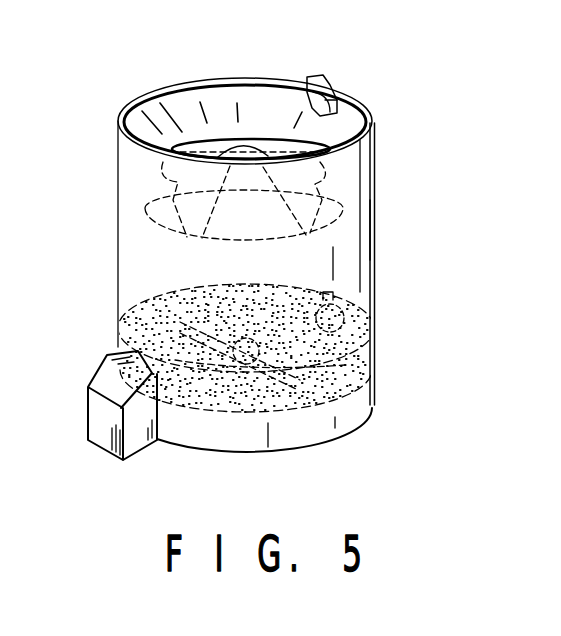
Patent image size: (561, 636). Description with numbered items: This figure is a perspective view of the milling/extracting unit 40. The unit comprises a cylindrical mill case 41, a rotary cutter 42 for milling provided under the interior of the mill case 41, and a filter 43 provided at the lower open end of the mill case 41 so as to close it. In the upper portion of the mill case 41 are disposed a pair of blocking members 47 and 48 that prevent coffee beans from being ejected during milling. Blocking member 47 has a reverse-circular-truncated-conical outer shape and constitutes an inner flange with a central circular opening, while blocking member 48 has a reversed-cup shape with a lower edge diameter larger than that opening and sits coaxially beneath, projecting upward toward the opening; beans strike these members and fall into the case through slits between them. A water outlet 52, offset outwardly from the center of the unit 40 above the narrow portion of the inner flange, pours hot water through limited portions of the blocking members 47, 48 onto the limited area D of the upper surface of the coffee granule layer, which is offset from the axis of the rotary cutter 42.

The milling/extracting unit 40 is at (380, 210).
The mill case 41 is at (376, 159).
The rotary cutter 42 is at (377, 352).
The filter 43 is at (368, 406).
The blocking member 47 is at (176, 103).
The blocking member 48 is at (166, 226).
The water outlet 52 is at (340, 102).
The limited area D is at (343, 286).